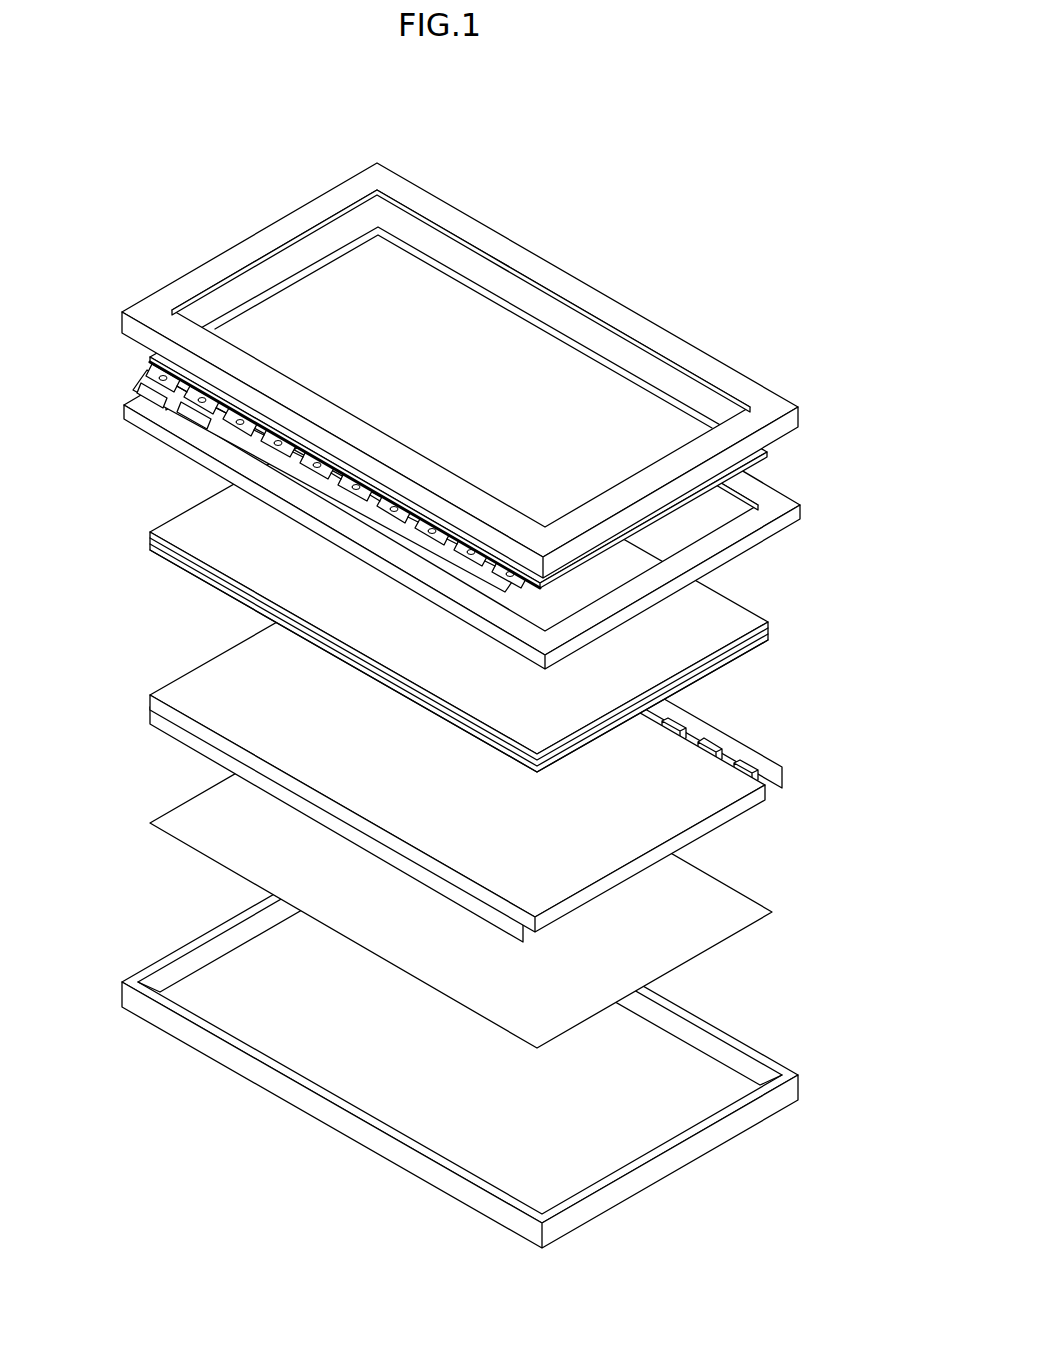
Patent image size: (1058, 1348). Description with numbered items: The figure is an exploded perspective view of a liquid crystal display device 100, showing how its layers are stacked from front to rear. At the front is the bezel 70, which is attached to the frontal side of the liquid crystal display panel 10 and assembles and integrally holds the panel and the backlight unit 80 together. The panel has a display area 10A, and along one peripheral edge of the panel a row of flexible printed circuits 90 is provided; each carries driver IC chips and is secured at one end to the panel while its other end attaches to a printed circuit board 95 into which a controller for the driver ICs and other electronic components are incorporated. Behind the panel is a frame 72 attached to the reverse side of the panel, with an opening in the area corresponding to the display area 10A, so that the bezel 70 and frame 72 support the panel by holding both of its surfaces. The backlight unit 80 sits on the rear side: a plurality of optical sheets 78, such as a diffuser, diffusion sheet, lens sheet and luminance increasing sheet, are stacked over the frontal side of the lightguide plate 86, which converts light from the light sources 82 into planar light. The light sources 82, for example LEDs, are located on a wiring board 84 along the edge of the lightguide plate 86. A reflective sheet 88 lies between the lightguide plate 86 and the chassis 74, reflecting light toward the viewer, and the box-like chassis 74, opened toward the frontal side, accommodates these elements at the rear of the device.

The liquid crystal display device 100 is at (732, 163).
The liquid crystal display panel 10 is at (458, 390).
The display area 10A is at (447, 372).
The bezel 70 is at (738, 367).
The frame 72 is at (773, 488).
The chassis 74 is at (631, 1212).
The optical sheets 78 is at (137, 525).
The backlight unit 80 is at (510, 808).
The light sources 82 is at (707, 730).
The wiring board 84 is at (770, 775).
The lightguide plate 86 is at (720, 793).
The reflective sheet 88 is at (717, 923).
The flexible printed circuits 90 is at (287, 478).
The printed circuit board 95 is at (215, 420).